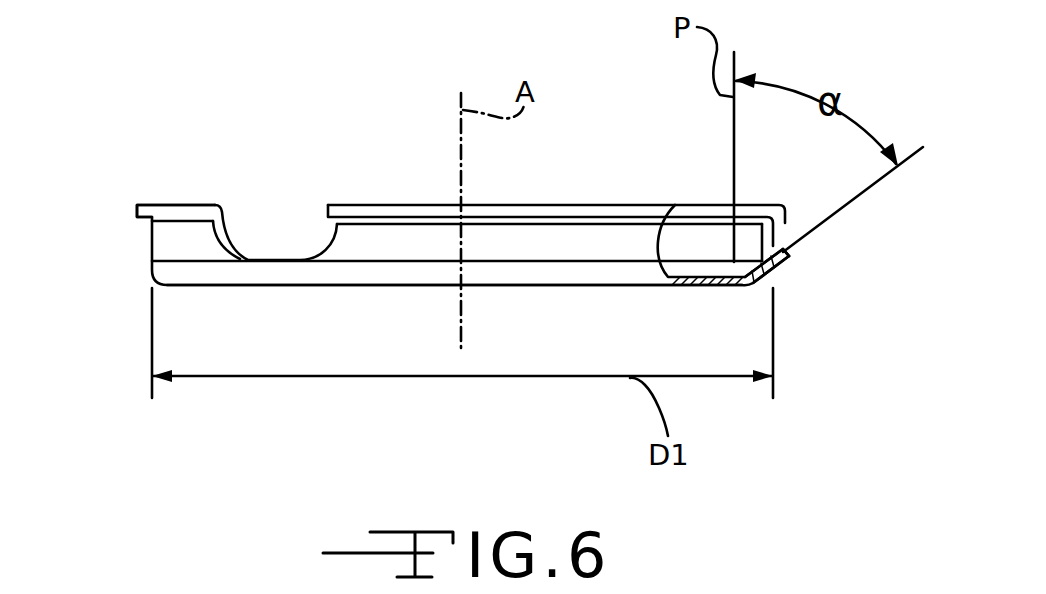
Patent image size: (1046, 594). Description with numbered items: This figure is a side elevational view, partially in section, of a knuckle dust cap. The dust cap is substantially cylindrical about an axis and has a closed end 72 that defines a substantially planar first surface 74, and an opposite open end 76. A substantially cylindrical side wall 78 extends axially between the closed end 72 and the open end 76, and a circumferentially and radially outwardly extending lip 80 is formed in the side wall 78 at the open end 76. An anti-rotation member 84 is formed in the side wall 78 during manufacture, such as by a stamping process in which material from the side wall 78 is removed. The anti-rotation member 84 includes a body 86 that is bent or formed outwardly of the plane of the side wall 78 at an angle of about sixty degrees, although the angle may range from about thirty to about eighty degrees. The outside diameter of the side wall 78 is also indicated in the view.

The closed end 72 is at (148, 277).
The first surface 74 is at (583, 287).
The open end 76 is at (133, 207).
The side wall 78 is at (164, 243).
The lip 80 is at (199, 212).
The anti-rotation member 84 is at (795, 262).
The body 86 is at (783, 264).